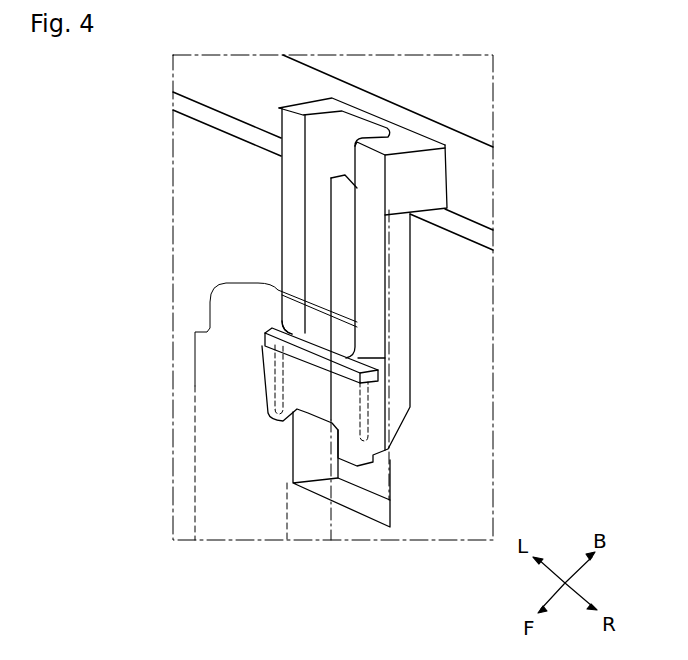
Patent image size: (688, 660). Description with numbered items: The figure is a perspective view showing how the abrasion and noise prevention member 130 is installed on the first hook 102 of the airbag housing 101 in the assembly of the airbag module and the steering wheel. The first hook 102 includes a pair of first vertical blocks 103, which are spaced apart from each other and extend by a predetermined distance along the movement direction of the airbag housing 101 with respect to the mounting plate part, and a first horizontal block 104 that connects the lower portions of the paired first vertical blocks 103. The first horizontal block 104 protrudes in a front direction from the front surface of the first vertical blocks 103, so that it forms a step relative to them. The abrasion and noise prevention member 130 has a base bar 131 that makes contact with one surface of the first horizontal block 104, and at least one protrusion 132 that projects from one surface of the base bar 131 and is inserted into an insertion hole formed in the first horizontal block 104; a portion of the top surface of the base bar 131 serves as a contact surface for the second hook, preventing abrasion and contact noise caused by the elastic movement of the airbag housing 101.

The airbag housing 101 is at (212, 198).
The first hook 102 is at (446, 312).
The first vertical blocks 103 is at (315, 229).
The first horizontal block 104 is at (380, 402).
The abrasion and noise prevention member 130 is at (208, 343).
The base bar 131 is at (285, 320).
The protrusion 132 is at (276, 353).